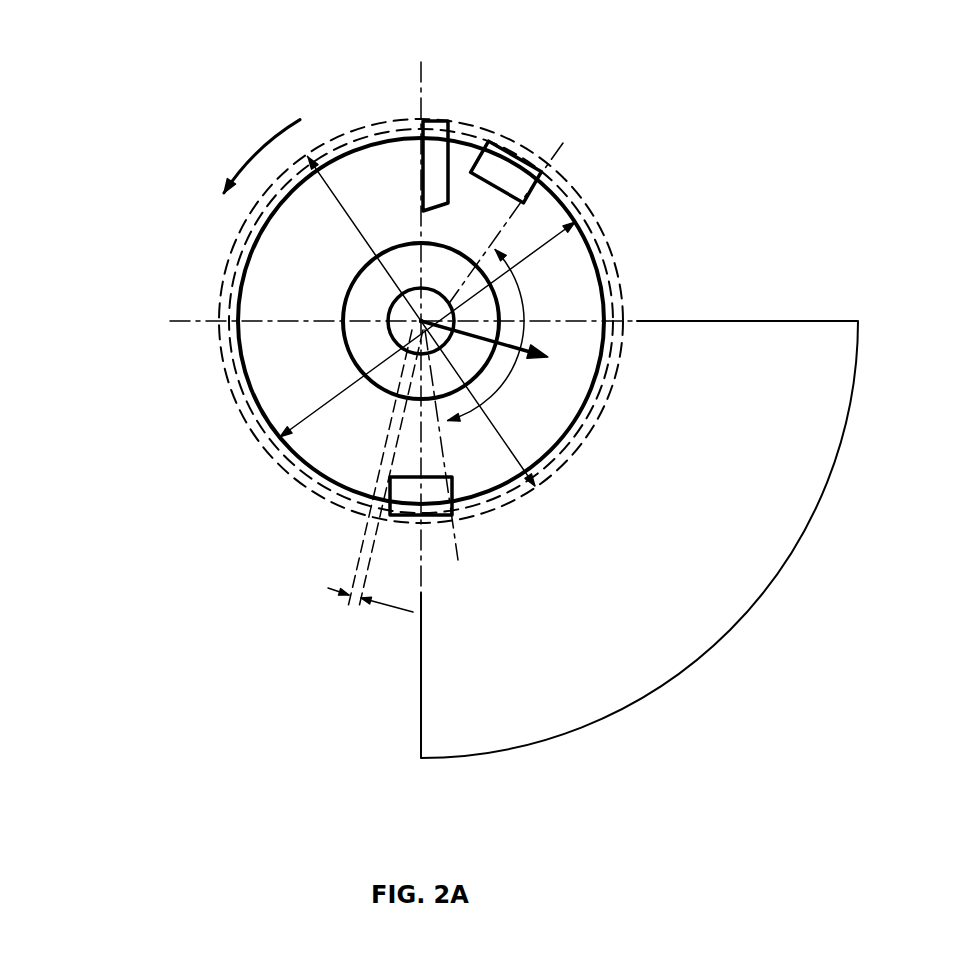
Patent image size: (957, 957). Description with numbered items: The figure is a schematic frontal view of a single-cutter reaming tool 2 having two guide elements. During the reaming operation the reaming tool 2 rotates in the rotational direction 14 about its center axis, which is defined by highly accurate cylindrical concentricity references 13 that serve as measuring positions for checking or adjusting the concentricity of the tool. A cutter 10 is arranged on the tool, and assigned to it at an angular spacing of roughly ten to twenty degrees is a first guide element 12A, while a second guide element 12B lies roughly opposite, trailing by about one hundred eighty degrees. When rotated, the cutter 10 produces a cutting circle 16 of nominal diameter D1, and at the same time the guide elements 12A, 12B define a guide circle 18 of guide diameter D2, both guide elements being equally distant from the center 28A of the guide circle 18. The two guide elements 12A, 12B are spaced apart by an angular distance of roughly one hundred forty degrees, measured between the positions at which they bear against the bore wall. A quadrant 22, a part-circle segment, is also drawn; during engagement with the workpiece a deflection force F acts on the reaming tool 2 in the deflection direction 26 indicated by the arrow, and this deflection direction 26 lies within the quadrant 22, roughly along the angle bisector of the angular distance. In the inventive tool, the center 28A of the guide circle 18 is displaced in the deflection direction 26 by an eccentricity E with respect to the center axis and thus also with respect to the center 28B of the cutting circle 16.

The reaming tool 2 is at (291, 372).
The cutter 10 is at (431, 126).
The first guide element 12A is at (510, 165).
The second guide element 12B is at (433, 505).
The concentricity reference 13 is at (418, 318).
The rotational direction 14 is at (250, 150).
The cutting circle 16 is at (224, 359).
The guide circle 18 is at (258, 428).
The quadrant 22 is at (738, 628).
The deflection direction 26 is at (529, 323).
The center of the guide circle 28A is at (421, 321).
The center of the cutting circle 28B is at (421, 321).
The nominal diameter D1 is at (350, 212).
The guide diameter D2 is at (320, 413).
The eccentricity E is at (350, 608).